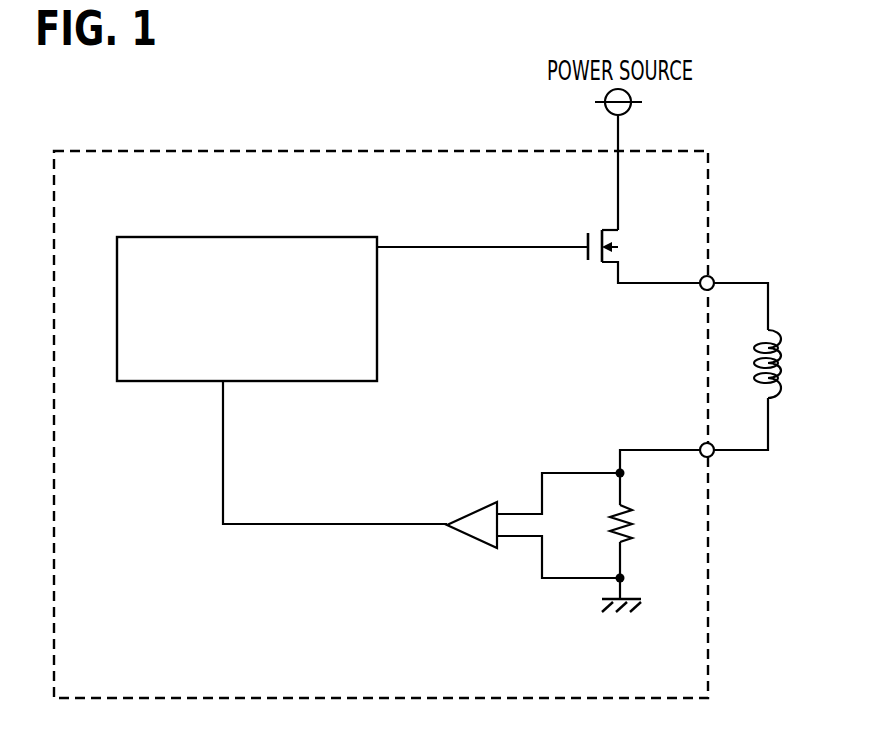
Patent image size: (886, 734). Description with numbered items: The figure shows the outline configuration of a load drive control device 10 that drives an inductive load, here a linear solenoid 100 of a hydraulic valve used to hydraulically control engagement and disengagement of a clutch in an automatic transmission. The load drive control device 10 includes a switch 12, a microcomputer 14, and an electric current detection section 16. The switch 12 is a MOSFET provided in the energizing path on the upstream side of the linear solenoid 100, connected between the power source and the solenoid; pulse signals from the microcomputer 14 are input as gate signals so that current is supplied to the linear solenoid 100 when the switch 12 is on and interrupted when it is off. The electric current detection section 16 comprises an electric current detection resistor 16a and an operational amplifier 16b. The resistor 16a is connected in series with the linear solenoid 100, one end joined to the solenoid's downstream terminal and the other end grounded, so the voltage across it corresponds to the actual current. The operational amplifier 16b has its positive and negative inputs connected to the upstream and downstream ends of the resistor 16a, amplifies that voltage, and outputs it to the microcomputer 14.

The load drive control device 10 is at (708, 660).
The switch 12 is at (615, 245).
The microcomputer 14 is at (172, 237).
The electric current detection section 16 is at (571, 491).
The electric current detection resistor 16a is at (632, 530).
The operational amplifier 16b is at (475, 508).
The linear solenoid 100 is at (781, 373).